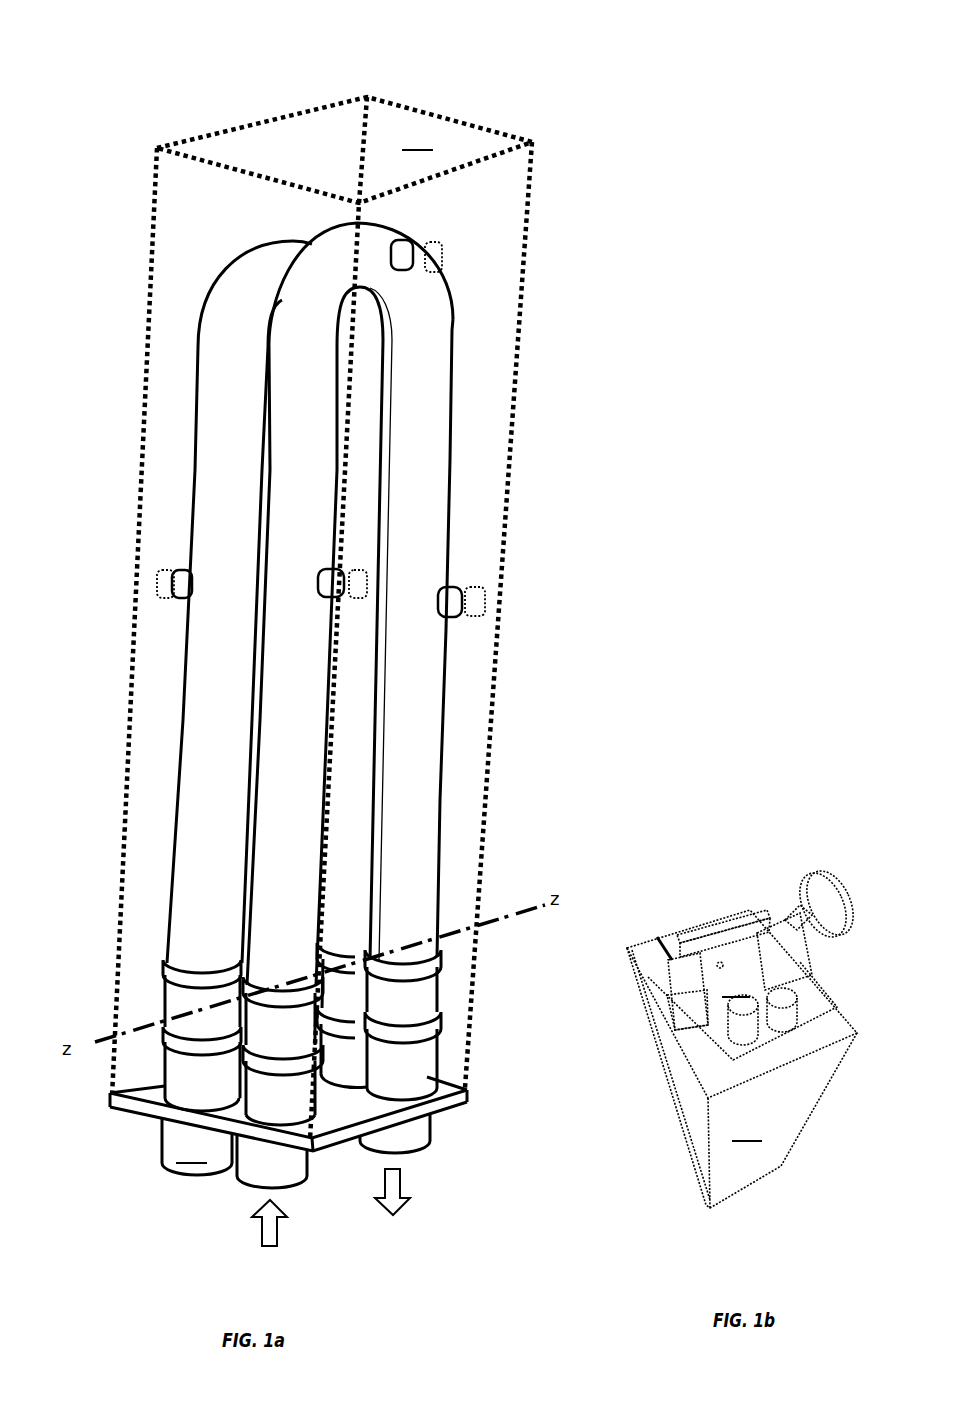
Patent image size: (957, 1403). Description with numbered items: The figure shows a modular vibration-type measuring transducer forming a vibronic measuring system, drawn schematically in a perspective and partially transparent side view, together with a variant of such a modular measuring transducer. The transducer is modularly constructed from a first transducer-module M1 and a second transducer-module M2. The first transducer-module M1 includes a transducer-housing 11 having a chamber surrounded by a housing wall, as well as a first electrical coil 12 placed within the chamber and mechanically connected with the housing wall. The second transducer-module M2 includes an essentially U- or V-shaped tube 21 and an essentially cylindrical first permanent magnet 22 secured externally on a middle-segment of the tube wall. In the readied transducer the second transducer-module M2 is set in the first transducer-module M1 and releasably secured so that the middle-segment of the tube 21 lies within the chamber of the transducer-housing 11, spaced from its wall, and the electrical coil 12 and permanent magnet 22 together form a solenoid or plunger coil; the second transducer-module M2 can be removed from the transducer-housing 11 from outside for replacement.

In FIG. 1a, the transducer-housing 11 is at (477, 502).
In FIG. 1a, the first electrical coil 12 is at (443, 255).
In FIG. 1a, the first tube 21 is at (412, 750).
In FIG. 1a, the first permanent magnet 22 is at (395, 248).
In FIG. 1a, the first transducer-module M1 is at (417, 139).
In FIG. 1b, the first transducer-module M1 is at (747, 1129).
In FIG. 1a, the second transducer-module M2 is at (191, 1152).
In FIG. 1b, the second transducer-module M2 is at (736, 986).